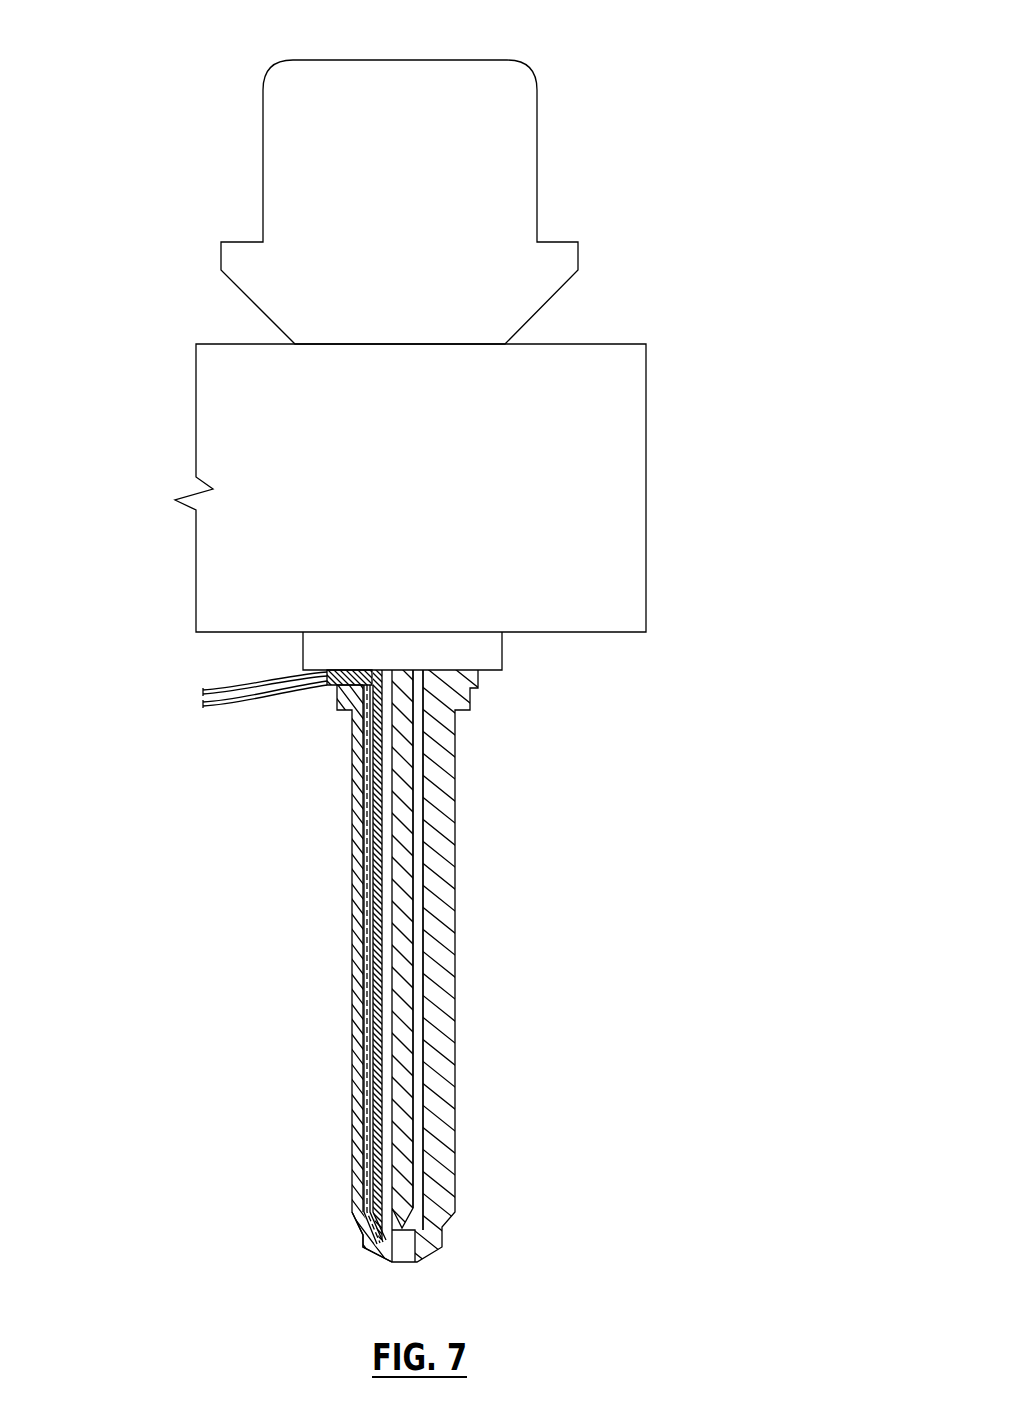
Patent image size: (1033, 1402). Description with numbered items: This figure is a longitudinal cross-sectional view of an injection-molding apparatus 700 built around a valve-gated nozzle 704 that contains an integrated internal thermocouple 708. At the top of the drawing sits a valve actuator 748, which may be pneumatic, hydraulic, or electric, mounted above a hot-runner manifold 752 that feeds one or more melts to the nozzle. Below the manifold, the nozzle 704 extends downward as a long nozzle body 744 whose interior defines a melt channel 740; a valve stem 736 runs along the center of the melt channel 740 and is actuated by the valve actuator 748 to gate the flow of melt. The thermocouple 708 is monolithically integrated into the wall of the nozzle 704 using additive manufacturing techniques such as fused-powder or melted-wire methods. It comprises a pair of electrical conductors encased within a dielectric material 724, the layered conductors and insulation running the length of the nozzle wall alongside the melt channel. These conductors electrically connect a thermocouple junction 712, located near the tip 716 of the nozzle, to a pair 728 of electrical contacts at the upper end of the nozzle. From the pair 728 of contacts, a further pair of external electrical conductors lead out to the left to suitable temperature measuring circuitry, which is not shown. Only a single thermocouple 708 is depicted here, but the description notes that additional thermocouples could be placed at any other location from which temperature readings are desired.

The injection-molding apparatus 700 is at (745, 262).
The valve-gated nozzle 704 is at (516, 970).
The thermocouple 708 is at (478, 967).
The thermocouple junction 712 is at (355, 1253).
The tip 716 is at (440, 1264).
The dielectric material 724 is at (363, 883).
The pair of electrical contacts 728 is at (318, 700).
The valve stem 736 is at (407, 1082).
The melt channel 740 is at (417, 1147).
The nozzle body 744 is at (440, 950).
The valve actuator 748 is at (530, 68).
The hot-runner manifold 752 is at (646, 425).